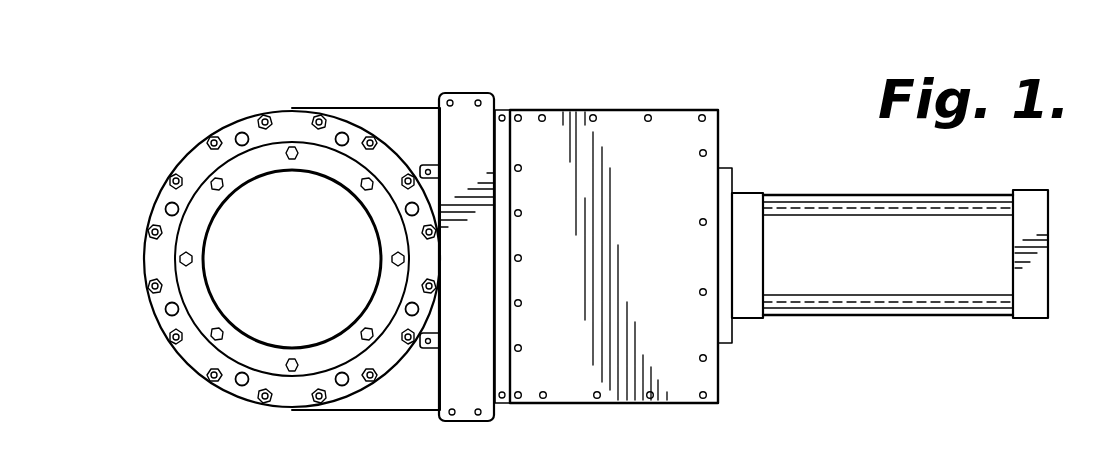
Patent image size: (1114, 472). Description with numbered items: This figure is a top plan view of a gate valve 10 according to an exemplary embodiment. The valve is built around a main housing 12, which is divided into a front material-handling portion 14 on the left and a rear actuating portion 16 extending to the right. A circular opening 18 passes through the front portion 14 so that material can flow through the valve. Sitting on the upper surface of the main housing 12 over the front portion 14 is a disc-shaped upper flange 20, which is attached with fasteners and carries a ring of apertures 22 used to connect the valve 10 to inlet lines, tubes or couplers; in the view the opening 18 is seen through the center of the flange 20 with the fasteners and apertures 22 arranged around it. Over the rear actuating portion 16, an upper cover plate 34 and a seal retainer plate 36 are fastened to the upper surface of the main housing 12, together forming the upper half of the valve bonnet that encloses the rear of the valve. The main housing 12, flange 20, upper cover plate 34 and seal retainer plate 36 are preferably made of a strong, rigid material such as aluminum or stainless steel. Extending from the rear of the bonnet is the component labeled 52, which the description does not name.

The gate valve 10 is at (743, 87).
The main housing 12 is at (390, 412).
The front material-handling portion 14 is at (437, 77).
The rear actuating portion 16 is at (722, 73).
The circular opening 18 is at (235, 302).
The upper flange 20 is at (145, 272).
The apertures 22 is at (243, 386).
The upper cover plate 34 is at (623, 392).
The seal retainer plate 36 is at (485, 400).
The actuator cylinder 52 is at (852, 195).